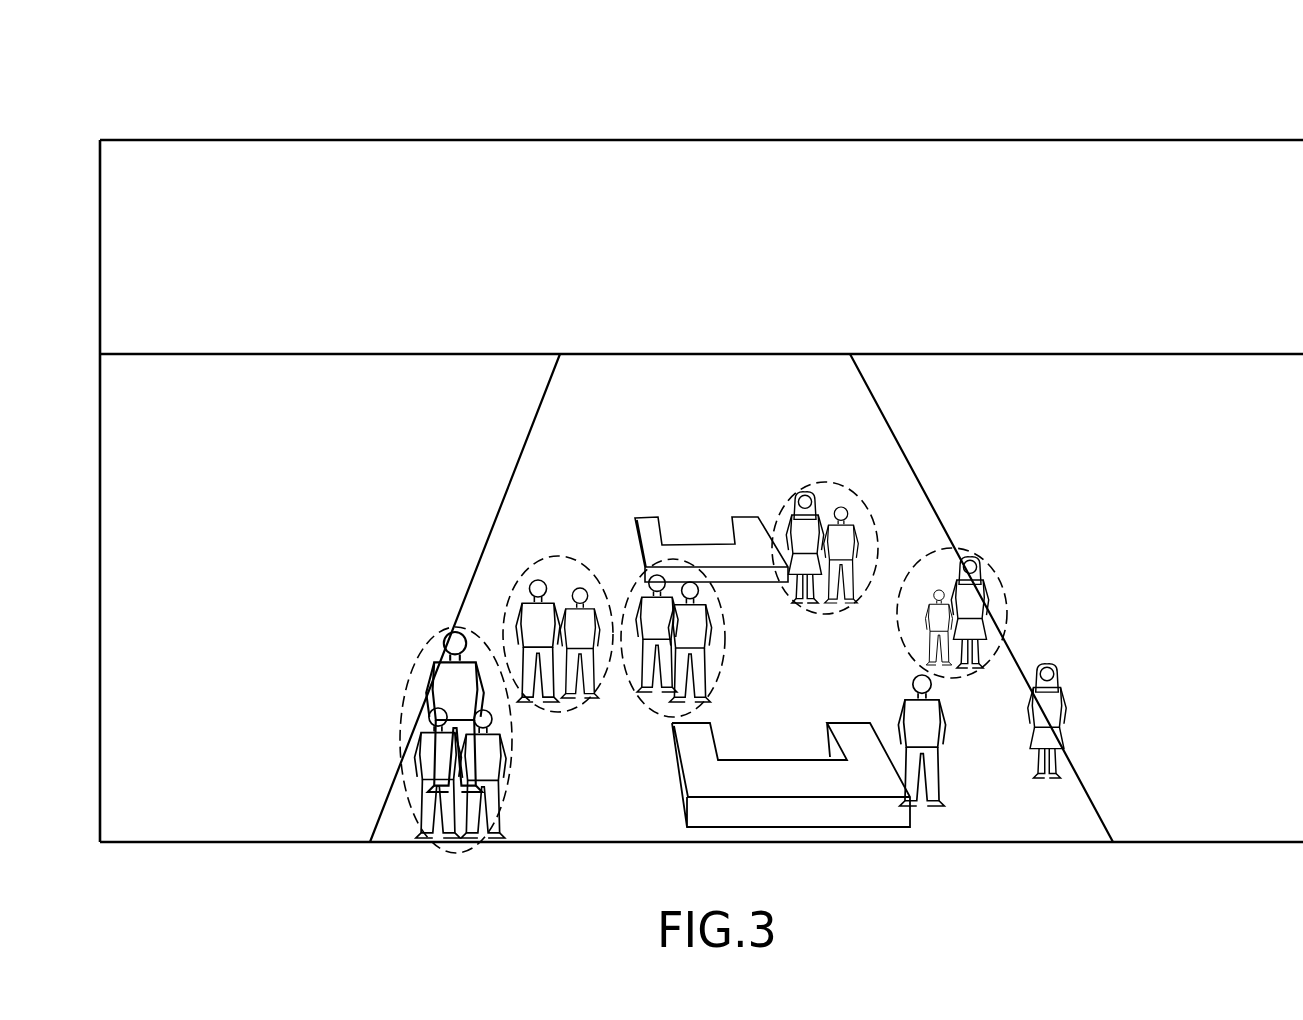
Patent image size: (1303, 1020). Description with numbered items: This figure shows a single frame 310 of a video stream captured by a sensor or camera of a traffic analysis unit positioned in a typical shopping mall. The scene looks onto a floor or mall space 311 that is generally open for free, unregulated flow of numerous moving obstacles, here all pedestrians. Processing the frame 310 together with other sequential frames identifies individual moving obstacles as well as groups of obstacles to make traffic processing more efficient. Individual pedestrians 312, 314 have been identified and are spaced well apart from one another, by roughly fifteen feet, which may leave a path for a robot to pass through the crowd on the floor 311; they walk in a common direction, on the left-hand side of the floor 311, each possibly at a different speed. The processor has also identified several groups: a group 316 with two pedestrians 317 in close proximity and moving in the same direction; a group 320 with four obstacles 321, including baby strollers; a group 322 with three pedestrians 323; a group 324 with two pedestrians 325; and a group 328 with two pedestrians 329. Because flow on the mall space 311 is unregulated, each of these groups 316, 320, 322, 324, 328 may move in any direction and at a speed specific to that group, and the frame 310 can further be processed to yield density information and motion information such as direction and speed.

The frame 310 is at (130, 111).
The floor or mall space 311 is at (1175, 827).
The individual obstacle (pedestrian) 312 is at (926, 690).
The individual obstacle (pedestrian) 314 is at (1034, 684).
The group 316 is at (900, 627).
The obstacles/pedestrians 317 is at (975, 620).
The group 320 is at (512, 731).
The obstacles/pedestrians 321 is at (443, 697).
The group 322 is at (598, 578).
The obstacles/pedestrians 323 is at (575, 597).
The group 324 is at (722, 670).
The obstacles/pedestrians 325 is at (722, 628).
The group 328 is at (787, 503).
The obstacles/pedestrians 329 is at (835, 490).